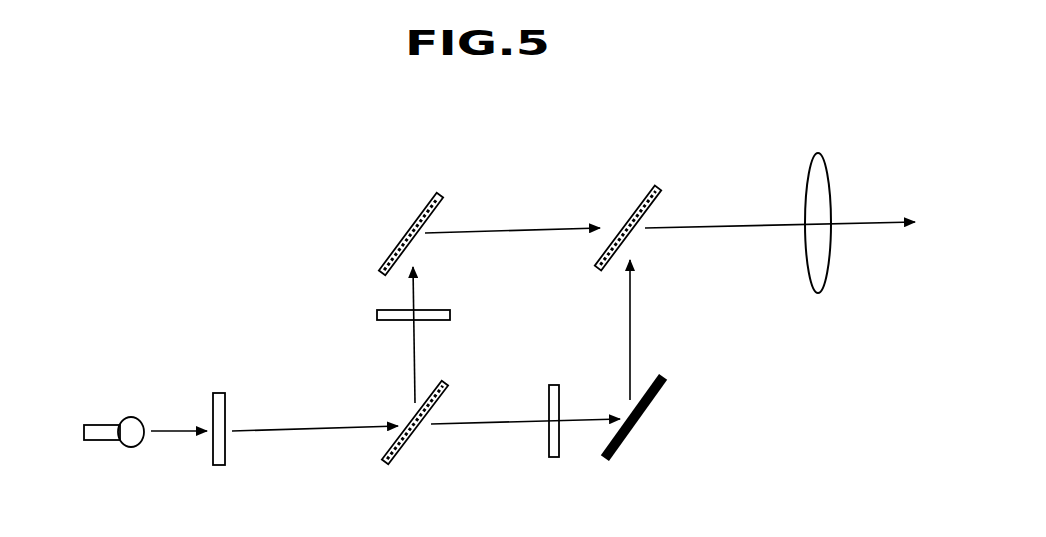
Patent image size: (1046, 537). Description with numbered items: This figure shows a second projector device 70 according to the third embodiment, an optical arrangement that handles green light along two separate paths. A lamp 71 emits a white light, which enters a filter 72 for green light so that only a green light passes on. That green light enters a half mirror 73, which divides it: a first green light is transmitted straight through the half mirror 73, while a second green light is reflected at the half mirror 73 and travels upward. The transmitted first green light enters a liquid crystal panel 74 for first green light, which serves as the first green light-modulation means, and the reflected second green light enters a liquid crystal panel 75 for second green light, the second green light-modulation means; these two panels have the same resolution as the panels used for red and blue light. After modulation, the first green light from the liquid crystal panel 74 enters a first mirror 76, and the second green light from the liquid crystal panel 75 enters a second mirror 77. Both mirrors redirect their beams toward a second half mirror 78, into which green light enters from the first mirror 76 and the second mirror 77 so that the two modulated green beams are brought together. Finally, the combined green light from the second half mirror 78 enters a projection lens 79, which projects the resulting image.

The second projector device 70 is at (752, 303).
The lamp 71 is at (132, 416).
The filter for green light 72 is at (218, 393).
The half mirror 73 is at (407, 445).
The liquid crystal panel for first green light 74 is at (554, 385).
The liquid crystal panel for second green light 75 is at (377, 315).
The first mirror 76 is at (645, 413).
The second mirror 77 is at (422, 210).
The second half mirror 78 is at (640, 201).
The projection lens 79 is at (818, 153).